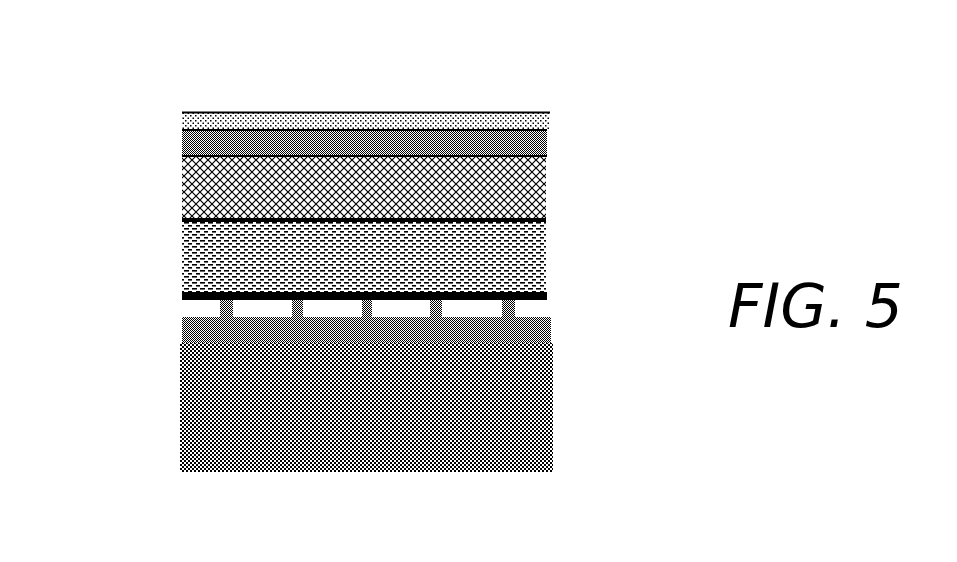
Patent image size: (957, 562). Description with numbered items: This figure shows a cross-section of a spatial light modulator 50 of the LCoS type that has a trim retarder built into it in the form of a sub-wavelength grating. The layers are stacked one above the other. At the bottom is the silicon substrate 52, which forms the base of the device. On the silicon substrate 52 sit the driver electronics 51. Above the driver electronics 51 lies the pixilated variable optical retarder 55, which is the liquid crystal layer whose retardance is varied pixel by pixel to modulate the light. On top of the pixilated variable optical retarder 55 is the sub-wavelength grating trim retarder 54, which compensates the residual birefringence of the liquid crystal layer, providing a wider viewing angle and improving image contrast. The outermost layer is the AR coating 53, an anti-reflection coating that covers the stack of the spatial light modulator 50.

The spatial light modulator 50 is at (139, 57).
The driver electronics 51 is at (183, 325).
The silicon substrate 52 is at (399, 424).
The AR coating 53 is at (425, 112).
The sub-wavelength grating trim retarder 54 is at (545, 145).
The pixilated variable optical retarder 55 is at (567, 170).